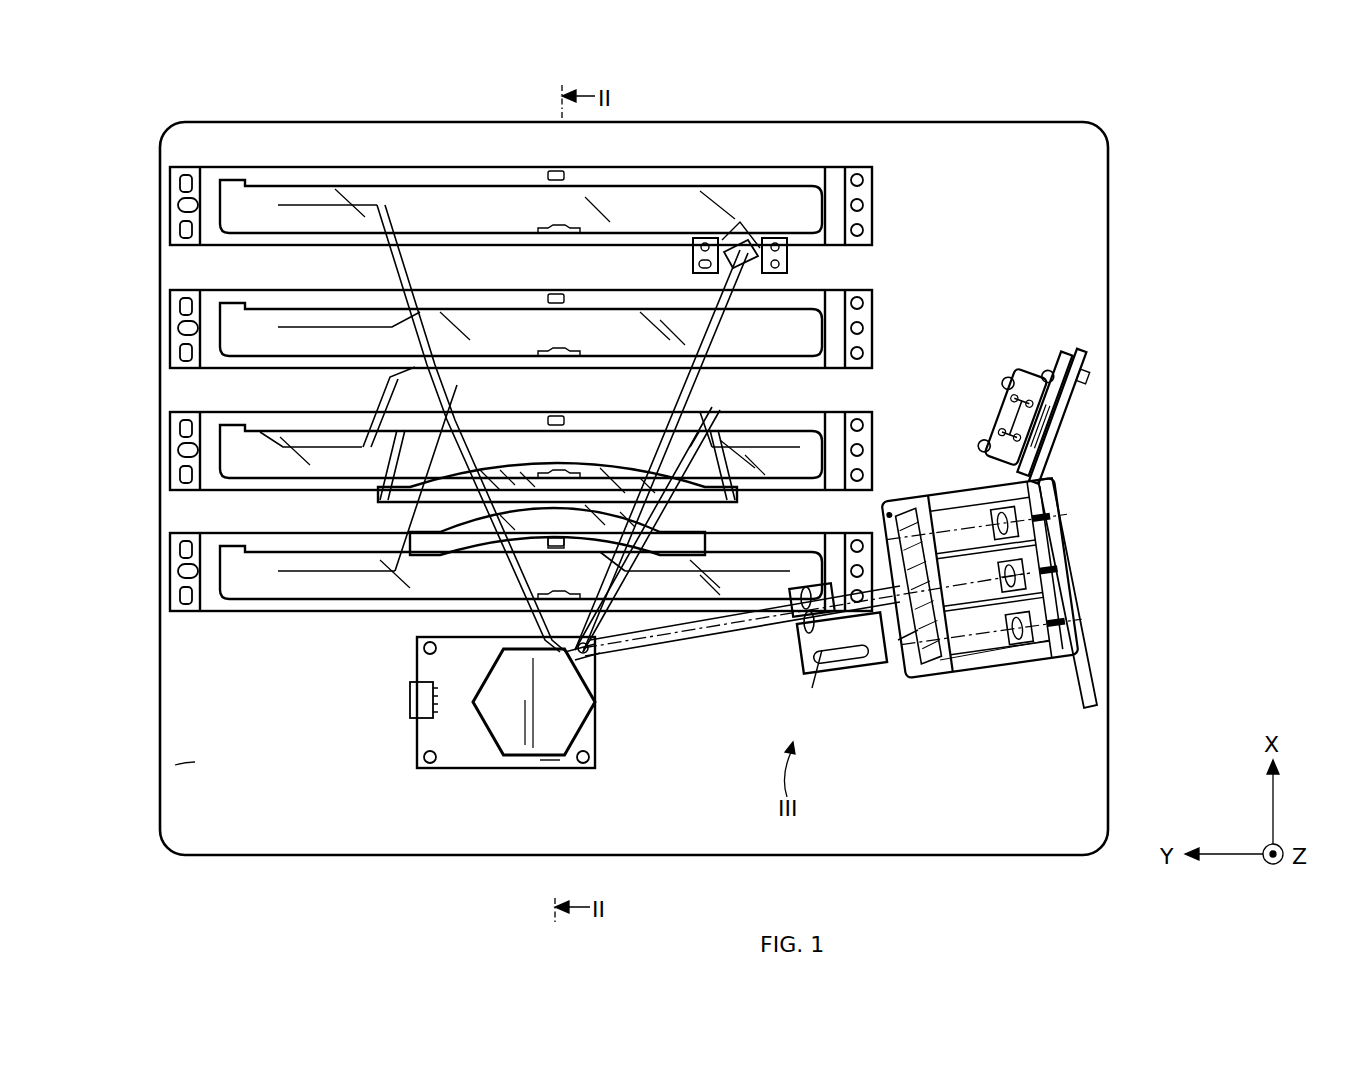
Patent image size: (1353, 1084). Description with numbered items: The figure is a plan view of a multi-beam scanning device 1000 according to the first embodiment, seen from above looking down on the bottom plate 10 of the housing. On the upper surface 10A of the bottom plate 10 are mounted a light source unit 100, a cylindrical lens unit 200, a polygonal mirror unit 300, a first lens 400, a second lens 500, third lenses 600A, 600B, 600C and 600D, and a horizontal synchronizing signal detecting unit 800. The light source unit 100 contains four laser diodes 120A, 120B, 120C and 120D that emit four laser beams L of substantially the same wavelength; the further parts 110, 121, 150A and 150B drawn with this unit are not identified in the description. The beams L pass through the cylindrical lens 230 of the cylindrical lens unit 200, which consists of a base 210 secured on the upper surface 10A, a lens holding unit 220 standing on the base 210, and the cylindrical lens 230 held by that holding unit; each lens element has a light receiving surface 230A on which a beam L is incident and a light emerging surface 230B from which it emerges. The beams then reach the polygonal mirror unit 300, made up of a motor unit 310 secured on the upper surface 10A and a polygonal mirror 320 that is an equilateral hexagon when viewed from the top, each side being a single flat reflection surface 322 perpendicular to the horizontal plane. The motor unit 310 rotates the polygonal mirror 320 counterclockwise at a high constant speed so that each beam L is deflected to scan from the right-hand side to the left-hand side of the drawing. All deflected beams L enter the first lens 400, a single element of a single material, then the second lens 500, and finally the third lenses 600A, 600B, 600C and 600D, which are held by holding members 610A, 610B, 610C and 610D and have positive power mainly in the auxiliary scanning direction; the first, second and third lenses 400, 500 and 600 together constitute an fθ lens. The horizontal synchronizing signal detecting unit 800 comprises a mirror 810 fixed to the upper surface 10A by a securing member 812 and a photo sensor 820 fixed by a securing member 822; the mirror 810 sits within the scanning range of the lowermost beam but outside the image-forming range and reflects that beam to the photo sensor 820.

The bottom plate 10 is at (160, 700).
The upper surface 10A is at (175, 765).
The multi-beam scanning device 1000 is at (1135, 170).
The light source unit 100 is at (1031, 605).
The light receiving unit base 110 is at (1020, 675).
The laser diode 120A is at (1062, 576).
The laser diode 120B is at (1068, 630).
The laser diode 120C is at (1062, 520).
The laser diode 120D is at (1012, 575).
The circuit board 121 is at (1088, 692).
The optical element 150A is at (900, 648).
The prism 150B is at (888, 518).
The cylindrical lens unit 200 is at (800, 657).
The base 210 is at (882, 663).
The lens holding unit 220 is at (812, 692).
The cylindrical lens 230 is at (774, 630).
The light receiving surface 230A is at (808, 635).
The light emerging surface 230B is at (800, 612).
The polygonal mirror unit 300 is at (525, 734).
The motor unit 310 is at (520, 768).
The polygonal mirror 320 is at (482, 694).
The reflection surface 322 is at (588, 657).
The first lens 400 is at (432, 552).
The second lens 500 is at (600, 452).
The third lenses 600 is at (890, 207).
The third lens 600A is at (521, 187).
The third lens 600B is at (521, 310).
The third lens 600C is at (521, 431).
The third lens 600D is at (521, 552).
The holding member 610A is at (725, 176).
The holding member 610B is at (605, 298).
The holding member 610C is at (778, 412).
The holding member 610D is at (738, 546).
The horizontal synchronizing signal detecting unit 800 is at (1044, 394).
The mirror 810 is at (742, 245).
The securing member 812 is at (773, 248).
The photo sensor 820 is at (1040, 416).
The securing member 822 is at (1062, 350).
The laser beam L is at (620, 565).